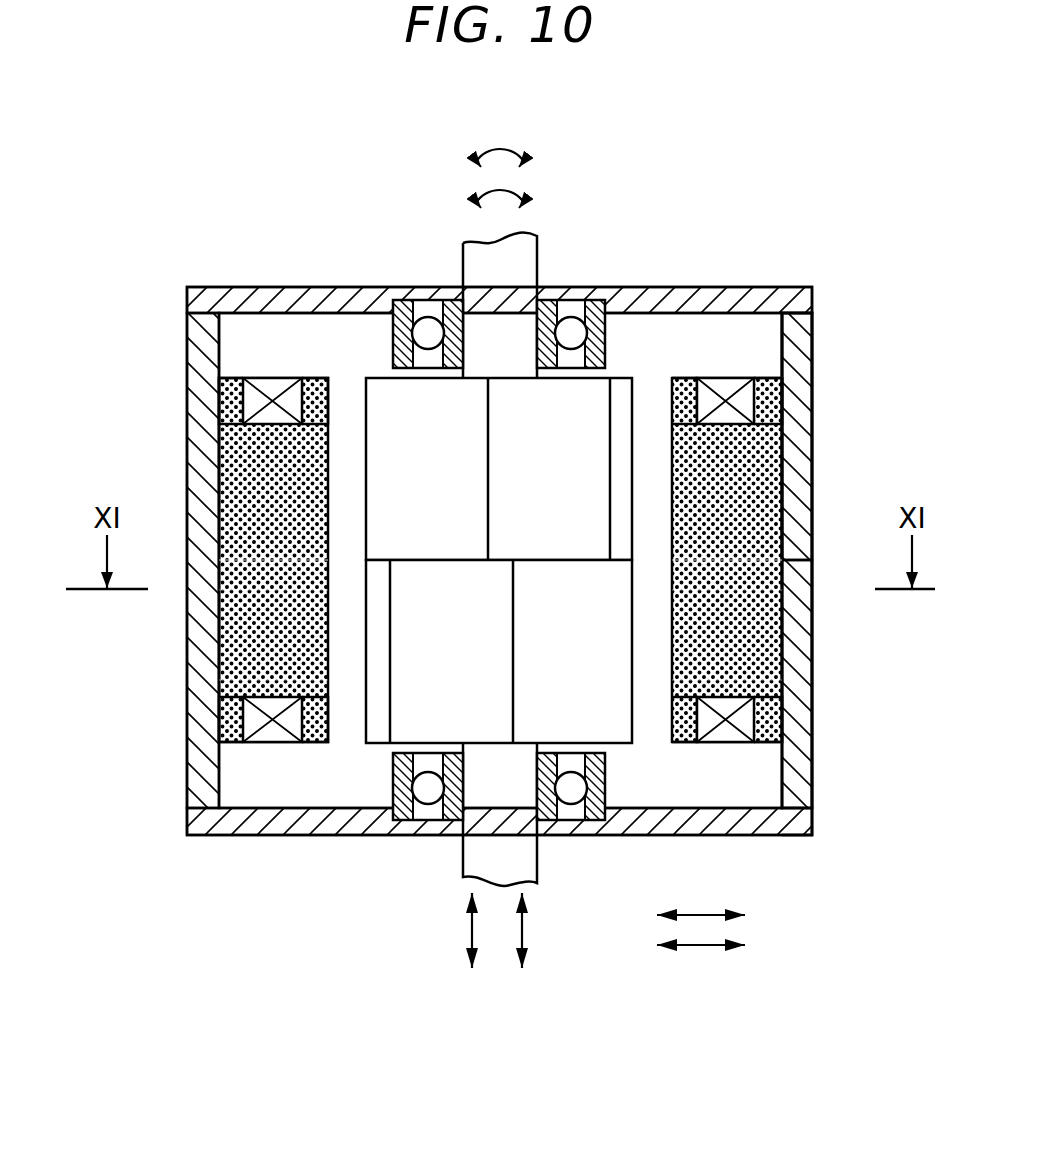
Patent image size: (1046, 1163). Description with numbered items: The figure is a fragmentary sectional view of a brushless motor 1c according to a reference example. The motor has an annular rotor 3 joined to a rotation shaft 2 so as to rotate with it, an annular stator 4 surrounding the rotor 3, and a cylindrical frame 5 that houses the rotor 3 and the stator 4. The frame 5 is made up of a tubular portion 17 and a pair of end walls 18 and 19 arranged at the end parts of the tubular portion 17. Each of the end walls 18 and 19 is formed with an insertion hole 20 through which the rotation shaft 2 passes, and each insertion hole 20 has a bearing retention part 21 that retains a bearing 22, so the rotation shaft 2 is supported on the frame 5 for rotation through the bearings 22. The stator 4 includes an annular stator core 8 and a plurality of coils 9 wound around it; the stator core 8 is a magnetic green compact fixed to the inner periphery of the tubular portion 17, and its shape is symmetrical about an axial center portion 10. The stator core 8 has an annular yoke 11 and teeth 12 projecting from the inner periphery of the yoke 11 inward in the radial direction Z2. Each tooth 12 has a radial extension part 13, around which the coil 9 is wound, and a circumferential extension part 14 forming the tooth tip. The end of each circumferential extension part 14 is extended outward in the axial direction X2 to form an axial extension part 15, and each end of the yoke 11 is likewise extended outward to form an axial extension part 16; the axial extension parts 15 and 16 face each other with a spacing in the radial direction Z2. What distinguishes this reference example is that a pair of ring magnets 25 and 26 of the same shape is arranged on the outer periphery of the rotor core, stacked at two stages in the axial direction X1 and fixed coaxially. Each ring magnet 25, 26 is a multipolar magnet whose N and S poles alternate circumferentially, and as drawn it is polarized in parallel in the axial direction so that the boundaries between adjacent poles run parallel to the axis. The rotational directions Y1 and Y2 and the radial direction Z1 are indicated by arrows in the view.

The brushless motor 1c is at (513, 547).
The rotation shaft 2 is at (518, 280).
The rotor 3 is at (506, 517).
The stator 4 is at (797, 418).
The frame 5 is at (827, 738).
The stator core 8 is at (797, 480).
The coil 9 is at (277, 386).
The axial center portion 10 is at (727, 560).
The yoke 11 is at (238, 467).
The tooth 12 is at (136, 612).
The radial extension part 13 is at (270, 625).
The circumferential extension part 14 is at (317, 655).
The axial extension part 15 is at (316, 388).
The axial extension part 16 is at (235, 388).
The tubular portion 17 is at (797, 790).
The end wall 18 is at (708, 826).
The end wall 19 is at (718, 294).
The insertion hole 20 is at (522, 566).
The bearing retention part 21 is at (607, 312).
The bearing 22 is at (428, 333).
The ring magnet 25 is at (385, 407).
The ring magnet 26 is at (405, 700).
The axial direction X1 is at (523, 932).
The axial direction X2 is at (473, 932).
The rotation direction Y1 is at (527, 160).
The rotation direction Y2 is at (527, 200).
The radial direction Z1 is at (705, 913).
The radial direction Z2 is at (701, 947).